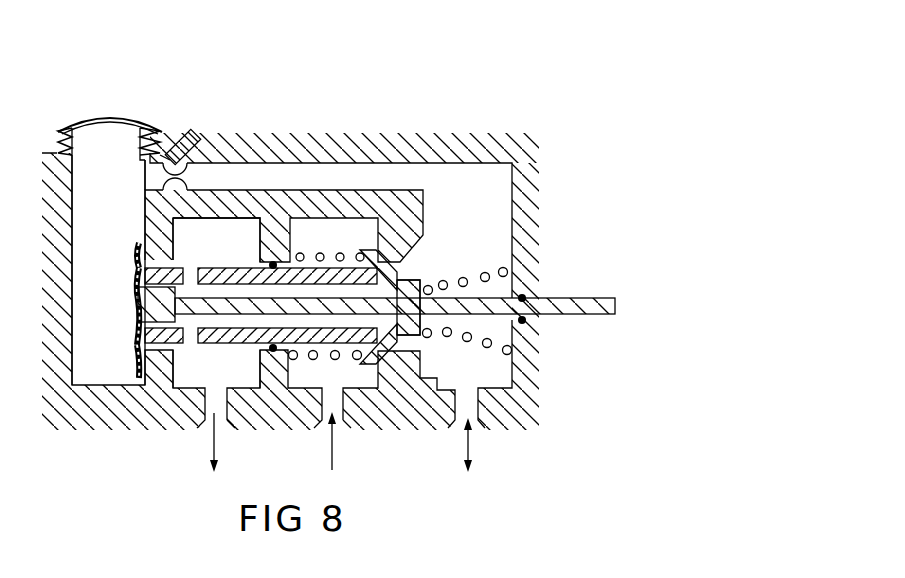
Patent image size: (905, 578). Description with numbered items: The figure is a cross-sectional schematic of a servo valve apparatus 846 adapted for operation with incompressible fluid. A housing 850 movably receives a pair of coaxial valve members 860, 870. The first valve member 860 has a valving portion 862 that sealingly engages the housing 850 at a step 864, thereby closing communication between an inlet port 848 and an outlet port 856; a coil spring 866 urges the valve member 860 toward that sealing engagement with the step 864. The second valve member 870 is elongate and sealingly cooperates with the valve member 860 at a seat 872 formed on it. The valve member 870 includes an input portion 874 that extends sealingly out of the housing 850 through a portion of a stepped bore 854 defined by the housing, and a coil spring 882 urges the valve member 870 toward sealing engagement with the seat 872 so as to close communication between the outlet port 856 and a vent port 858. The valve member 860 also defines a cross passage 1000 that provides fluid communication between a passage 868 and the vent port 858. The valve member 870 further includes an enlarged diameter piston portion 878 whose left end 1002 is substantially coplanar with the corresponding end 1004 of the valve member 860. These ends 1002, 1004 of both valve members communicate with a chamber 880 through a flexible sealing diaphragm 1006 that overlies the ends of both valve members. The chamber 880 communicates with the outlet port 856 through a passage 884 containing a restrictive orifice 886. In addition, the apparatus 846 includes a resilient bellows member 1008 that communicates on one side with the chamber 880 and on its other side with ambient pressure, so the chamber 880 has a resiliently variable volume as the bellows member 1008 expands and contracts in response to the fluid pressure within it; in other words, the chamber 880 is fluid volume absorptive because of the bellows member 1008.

The servo valve apparatus 846 is at (472, 88).
The housing 850 is at (535, 163).
The chamber 880 is at (130, 204).
The resilient bellows member 1008 is at (105, 130).
The restrictive orifice 886 is at (194, 150).
The passage 884 is at (278, 192).
The step 864 is at (378, 226).
The cross passage 1000 is at (187, 268).
The coil spring 866 is at (299, 253).
The passage 868 is at (248, 252).
The enlarged diameter piston portion 878 is at (135, 327).
The valve member 860 is at (258, 350).
The end 1004 is at (136, 253).
The left end 1002 is at (135, 292).
The flexible sealing diaphragm 1006 is at (135, 361).
The input portion 874 is at (575, 305).
The seat 872 is at (400, 280).
The valve member 870 is at (406, 284).
The valving portion 862 is at (383, 343).
The coil spring 882 is at (512, 258).
The stepped bore 854 is at (536, 322).
The vent port 858 is at (205, 422).
The inlet port 848 is at (346, 414).
The outlet port 856 is at (474, 414).